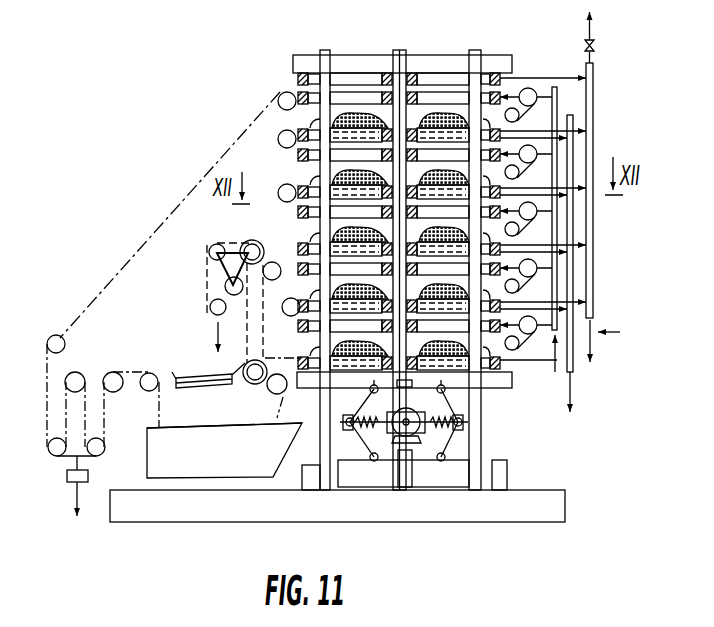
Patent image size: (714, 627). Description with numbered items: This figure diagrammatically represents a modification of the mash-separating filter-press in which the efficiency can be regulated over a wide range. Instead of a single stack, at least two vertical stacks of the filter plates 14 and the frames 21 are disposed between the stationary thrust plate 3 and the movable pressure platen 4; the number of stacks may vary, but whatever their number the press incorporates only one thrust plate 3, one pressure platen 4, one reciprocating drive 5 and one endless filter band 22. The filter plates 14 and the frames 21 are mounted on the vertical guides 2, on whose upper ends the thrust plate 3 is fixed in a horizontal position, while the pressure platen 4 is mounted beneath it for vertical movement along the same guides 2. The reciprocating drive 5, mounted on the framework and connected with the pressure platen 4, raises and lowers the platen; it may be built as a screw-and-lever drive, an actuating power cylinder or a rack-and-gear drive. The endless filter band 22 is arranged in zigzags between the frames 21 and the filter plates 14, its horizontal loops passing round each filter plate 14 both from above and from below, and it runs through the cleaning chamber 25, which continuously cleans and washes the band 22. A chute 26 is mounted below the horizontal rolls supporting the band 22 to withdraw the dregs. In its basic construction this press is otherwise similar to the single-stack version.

The vertical guides 2 is at (397, 55).
The stationary thrust plate 3 is at (447, 62).
The movable pressure platen 4 is at (290, 426).
The reciprocating drive 5 is at (424, 441).
The filter plates 14 is at (297, 244).
The frames 21 is at (298, 327).
The endless filter band 22 is at (222, 153).
The cleaning chamber 25 is at (208, 470).
The chute 26 is at (196, 389).